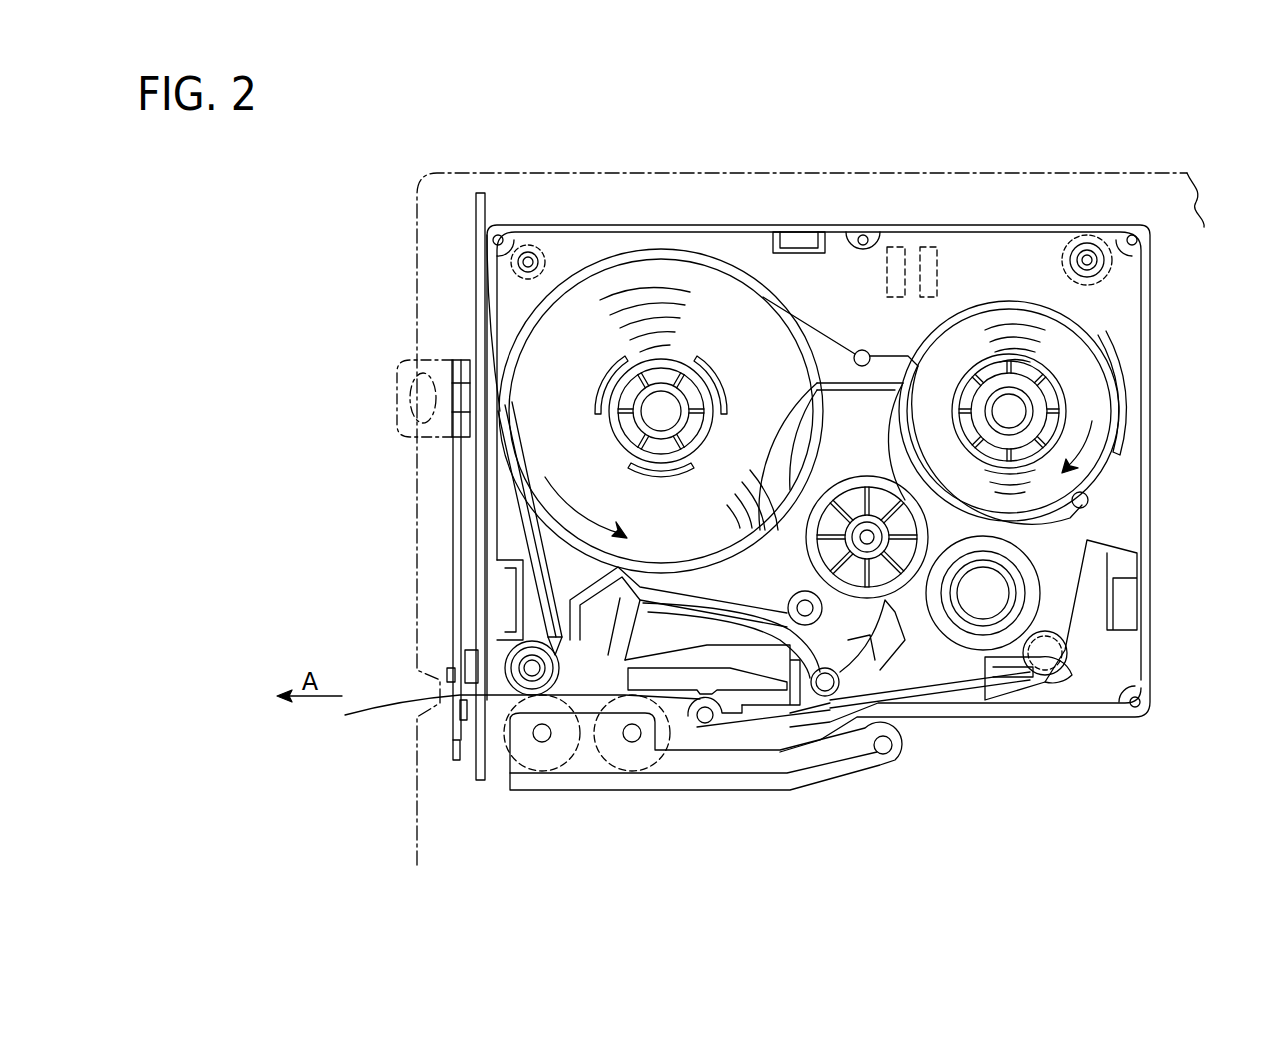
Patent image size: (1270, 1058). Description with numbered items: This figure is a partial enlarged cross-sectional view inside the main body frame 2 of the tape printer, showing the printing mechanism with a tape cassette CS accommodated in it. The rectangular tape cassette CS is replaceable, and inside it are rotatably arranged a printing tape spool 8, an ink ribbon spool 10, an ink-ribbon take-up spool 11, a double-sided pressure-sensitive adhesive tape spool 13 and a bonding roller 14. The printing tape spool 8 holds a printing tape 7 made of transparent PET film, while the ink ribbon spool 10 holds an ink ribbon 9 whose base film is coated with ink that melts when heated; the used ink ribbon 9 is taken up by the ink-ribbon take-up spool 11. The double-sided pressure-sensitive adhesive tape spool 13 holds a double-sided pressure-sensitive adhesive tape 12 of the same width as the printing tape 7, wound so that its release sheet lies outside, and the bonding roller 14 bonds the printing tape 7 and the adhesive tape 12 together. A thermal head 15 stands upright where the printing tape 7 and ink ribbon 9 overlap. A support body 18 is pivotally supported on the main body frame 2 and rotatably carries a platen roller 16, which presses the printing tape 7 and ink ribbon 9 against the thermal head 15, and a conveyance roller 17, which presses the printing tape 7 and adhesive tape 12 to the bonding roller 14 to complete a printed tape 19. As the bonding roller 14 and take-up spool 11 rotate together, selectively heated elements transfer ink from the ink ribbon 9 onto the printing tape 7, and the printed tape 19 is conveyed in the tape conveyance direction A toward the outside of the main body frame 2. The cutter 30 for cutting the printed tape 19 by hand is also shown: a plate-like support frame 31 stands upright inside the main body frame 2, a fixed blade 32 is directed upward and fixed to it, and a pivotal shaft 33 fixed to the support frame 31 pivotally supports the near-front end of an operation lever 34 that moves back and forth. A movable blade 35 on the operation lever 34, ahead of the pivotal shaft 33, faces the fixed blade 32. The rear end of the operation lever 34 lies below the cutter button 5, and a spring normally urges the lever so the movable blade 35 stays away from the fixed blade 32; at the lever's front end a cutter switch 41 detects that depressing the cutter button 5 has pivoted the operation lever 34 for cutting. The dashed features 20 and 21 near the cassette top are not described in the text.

The main body frame 2 is at (418, 275).
The cutter button 5 is at (407, 377).
The printing tape 7 is at (1093, 486).
The printing tape spool 8 is at (1055, 378).
The ink ribbon 9 is at (1017, 563).
The ink ribbon spool 10 is at (1017, 603).
The ink-ribbon take-up spool 11 is at (866, 477).
The double-sided pressure-sensitive adhesive tape 12 is at (655, 280).
The double-sided pressure-sensitive adhesive tape spool 13 is at (665, 366).
The bonding roller 14 is at (517, 663).
The thermal head 15 is at (677, 693).
The platen roller 16 is at (632, 772).
The conveyance roller 17 is at (545, 772).
The support body 18 is at (752, 783).
The printed tape 19 is at (360, 718).
The detection hole 20 is at (895, 243).
The detection hole 21 is at (928, 243).
The cutter 30 is at (406, 469).
The support frame 31 is at (477, 230).
The fixed blade 32 is at (463, 670).
The pivotal shaft 33 is at (447, 673).
The operation lever 34 is at (457, 537).
The movable blade 35 is at (470, 720).
The cutter switch 41 is at (457, 760).
The tape cassette CS is at (1150, 423).